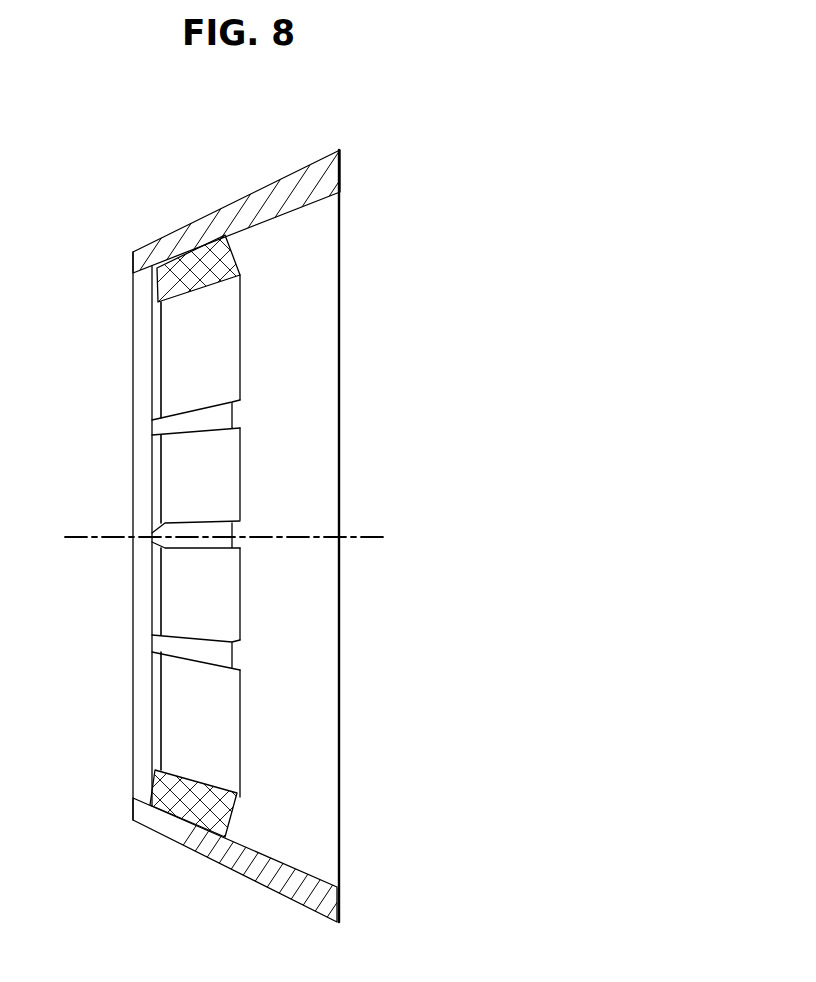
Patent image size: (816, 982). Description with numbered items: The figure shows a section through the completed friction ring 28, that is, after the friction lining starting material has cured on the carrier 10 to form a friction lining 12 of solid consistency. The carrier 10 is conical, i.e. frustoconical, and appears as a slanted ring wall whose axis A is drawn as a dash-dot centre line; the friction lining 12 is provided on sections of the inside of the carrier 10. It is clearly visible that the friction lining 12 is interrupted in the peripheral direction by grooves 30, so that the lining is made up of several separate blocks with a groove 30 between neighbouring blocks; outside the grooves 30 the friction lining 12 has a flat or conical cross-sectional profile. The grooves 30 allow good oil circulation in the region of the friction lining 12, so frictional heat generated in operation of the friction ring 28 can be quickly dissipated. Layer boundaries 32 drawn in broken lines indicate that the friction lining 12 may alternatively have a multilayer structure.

The carrier 10 is at (298, 188).
The friction lining 12 is at (220, 713).
The friction ring 28 is at (380, 212).
The groove 30 is at (203, 422).
The layer boundary 32 is at (228, 600).
The axis A is at (248, 539).